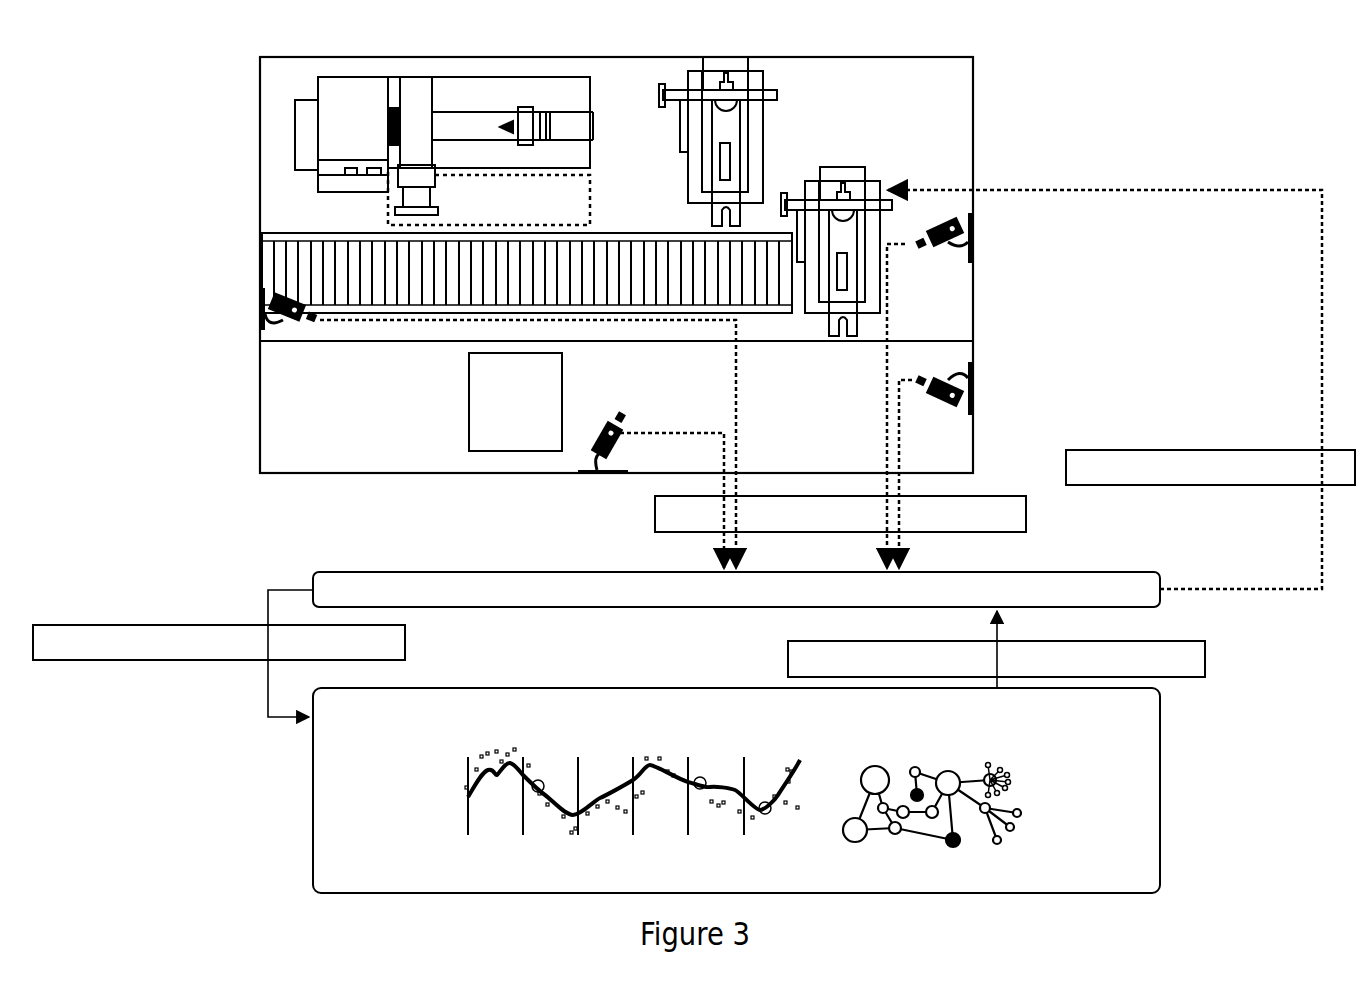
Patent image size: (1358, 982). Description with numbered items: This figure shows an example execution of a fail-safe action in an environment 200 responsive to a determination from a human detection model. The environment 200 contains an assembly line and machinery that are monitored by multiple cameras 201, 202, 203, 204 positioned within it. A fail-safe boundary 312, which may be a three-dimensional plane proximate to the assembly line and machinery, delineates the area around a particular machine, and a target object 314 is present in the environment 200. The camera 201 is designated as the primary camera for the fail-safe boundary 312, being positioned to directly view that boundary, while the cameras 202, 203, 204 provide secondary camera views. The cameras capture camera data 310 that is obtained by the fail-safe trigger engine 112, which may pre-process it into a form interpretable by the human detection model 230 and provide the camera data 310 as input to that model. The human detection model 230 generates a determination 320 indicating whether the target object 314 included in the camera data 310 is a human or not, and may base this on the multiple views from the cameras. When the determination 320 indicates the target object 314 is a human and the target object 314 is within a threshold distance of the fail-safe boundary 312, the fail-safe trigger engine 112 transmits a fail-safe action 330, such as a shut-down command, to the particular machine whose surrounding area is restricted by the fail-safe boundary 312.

The environment 200 is at (932, 57).
The camera 201 is at (258, 334).
The camera 202 is at (588, 476).
The camera 203 is at (973, 245).
The camera 204 is at (973, 388).
The target object 314 is at (499, 440).
The fail-safe boundary 312 is at (960, 336).
The camera data 310 is at (913, 525).
The fail-safe trigger engine 112 is at (1146, 600).
The fail-safe action 330 is at (1295, 478).
The determination 320 is at (1070, 671).
The human detection model 230 is at (855, 720).